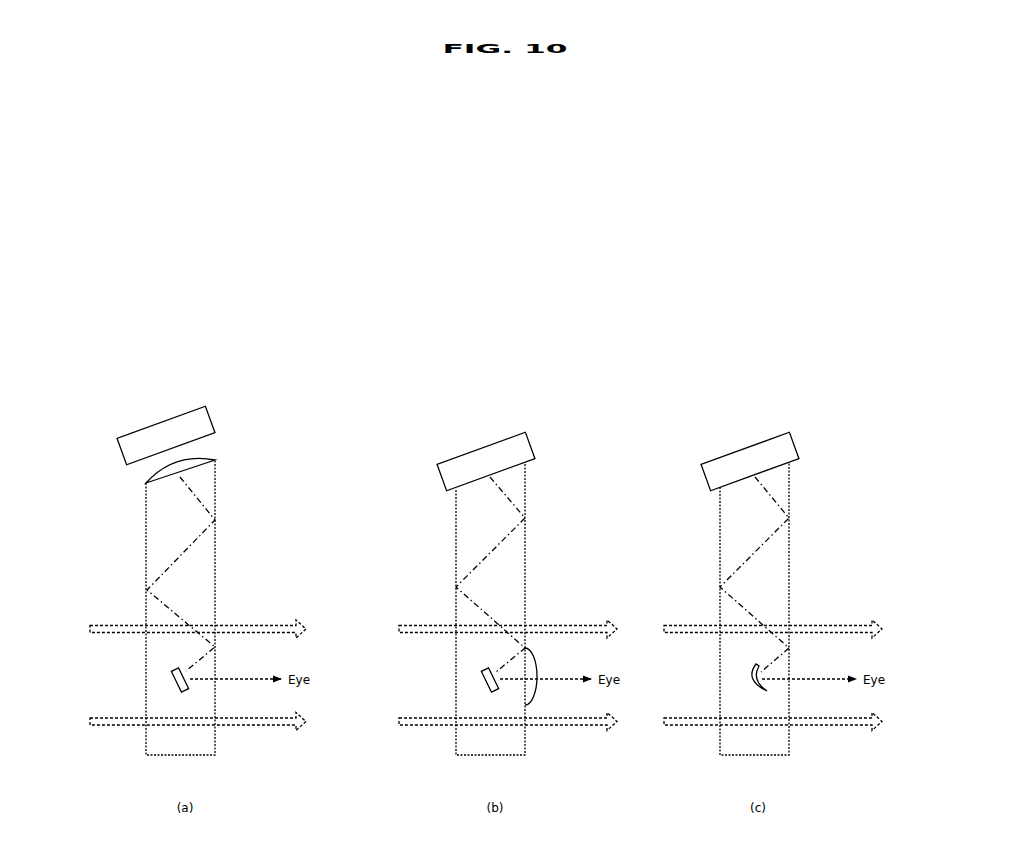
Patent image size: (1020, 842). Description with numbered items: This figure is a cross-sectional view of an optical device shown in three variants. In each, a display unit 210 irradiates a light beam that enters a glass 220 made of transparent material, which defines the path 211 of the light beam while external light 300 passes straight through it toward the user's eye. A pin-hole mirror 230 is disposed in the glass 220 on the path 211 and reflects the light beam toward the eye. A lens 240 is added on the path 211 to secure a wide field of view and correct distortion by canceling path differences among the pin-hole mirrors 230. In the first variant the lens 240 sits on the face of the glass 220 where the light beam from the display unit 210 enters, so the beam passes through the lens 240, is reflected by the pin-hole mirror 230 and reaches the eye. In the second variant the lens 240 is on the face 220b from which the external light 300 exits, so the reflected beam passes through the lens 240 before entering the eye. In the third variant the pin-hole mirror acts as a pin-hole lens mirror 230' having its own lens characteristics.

The display unit 210 is at (166, 417).
The path of the light beam 211 is at (205, 497).
The glass 220 is at (206, 581).
The face of the glass from which the external light is emitted out 220b is at (531, 562).
The pin-hole mirror 230 is at (329, 732).
The pin-hole lens mirror 230' is at (749, 730).
The lens 240 is at (207, 456).
The external light 300 is at (263, 617).